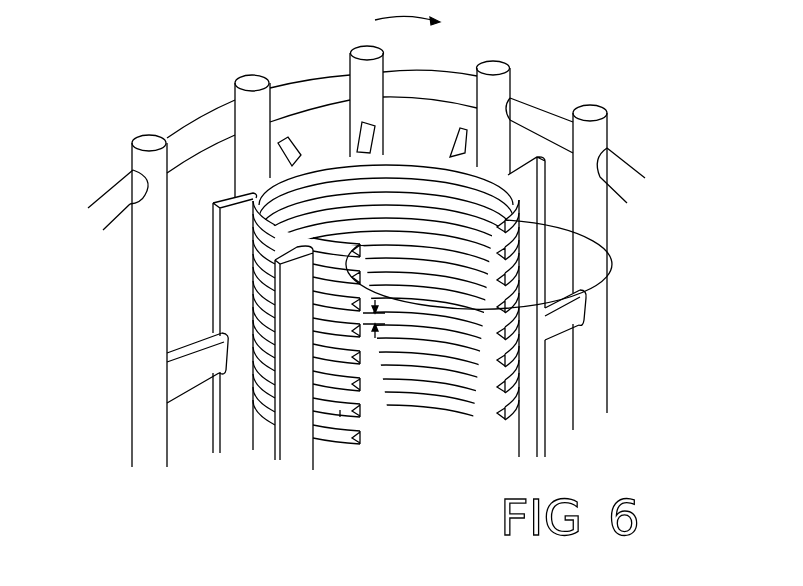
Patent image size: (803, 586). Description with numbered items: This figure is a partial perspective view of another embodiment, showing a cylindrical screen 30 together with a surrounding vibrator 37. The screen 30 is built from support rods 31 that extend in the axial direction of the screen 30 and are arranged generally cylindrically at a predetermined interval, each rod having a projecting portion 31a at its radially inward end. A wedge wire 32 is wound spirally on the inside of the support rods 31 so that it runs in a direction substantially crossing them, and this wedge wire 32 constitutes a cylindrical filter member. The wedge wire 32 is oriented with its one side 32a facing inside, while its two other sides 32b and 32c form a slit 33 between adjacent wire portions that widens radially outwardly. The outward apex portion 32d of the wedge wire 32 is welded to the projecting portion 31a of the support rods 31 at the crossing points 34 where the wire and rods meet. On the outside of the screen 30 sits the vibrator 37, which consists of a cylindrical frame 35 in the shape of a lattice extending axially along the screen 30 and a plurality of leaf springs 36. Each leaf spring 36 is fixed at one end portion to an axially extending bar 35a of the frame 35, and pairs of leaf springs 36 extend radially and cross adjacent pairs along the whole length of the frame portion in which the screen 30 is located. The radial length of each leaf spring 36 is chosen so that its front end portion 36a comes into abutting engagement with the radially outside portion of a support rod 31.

The cylindrical screen 30 is at (365, 253).
The support rod 31 is at (227, 263).
The projecting portion 31a is at (347, 147).
The wedge wire 32 is at (340, 258).
The one side of wedge wire 32a is at (359, 414).
The other side of wedge wire 32b is at (352, 402).
The other side of wedge wire 32c is at (355, 418).
The outward apex portion 32d is at (338, 418).
The slit 33 is at (386, 326).
The crossing point 34 is at (310, 410).
The cylindrical frame 35 is at (532, 99).
The axially extending bar 35a is at (140, 333).
The leaf spring 36 is at (323, 356).
The front end portion 36a is at (203, 343).
The vibrator 37 is at (640, 133).